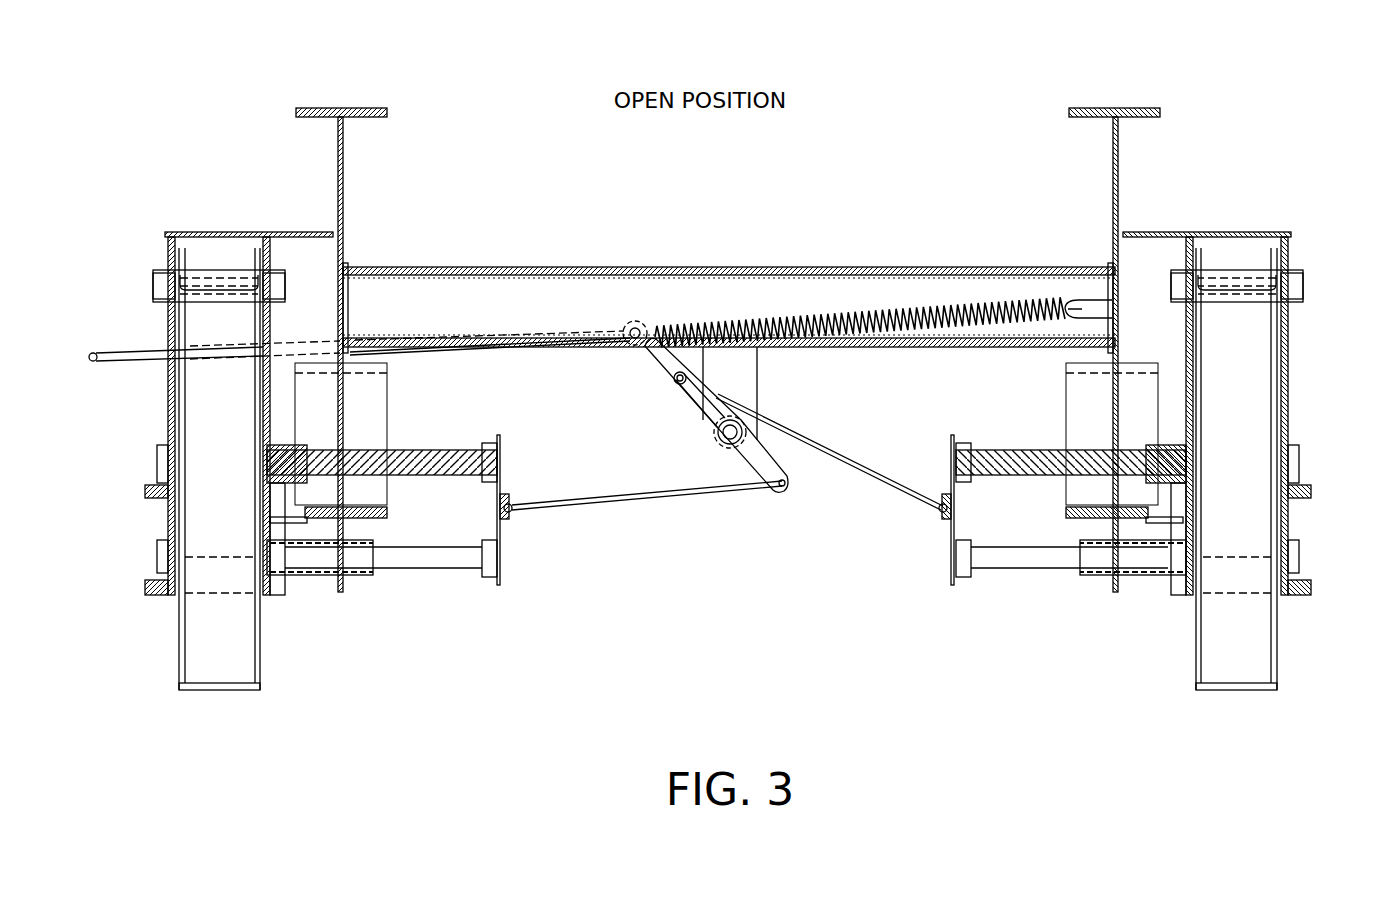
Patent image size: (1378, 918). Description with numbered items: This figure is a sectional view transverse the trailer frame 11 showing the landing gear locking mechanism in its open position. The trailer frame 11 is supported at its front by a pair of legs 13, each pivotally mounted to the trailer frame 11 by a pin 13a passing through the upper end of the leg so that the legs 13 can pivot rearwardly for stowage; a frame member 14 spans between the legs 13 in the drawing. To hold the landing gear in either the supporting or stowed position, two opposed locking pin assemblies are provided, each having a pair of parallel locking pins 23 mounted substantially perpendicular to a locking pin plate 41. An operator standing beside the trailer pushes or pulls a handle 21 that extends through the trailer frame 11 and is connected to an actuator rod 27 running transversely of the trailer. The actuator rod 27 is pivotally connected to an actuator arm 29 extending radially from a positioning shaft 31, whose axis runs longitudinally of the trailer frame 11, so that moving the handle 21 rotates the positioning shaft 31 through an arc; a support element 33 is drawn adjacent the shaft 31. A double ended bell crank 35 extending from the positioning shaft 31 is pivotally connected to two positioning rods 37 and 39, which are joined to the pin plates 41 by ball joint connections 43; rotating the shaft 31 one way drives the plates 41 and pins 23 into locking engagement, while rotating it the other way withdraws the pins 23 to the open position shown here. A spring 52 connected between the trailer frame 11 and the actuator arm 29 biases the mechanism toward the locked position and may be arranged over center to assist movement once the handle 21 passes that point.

The trailer frame 11 is at (343, 100).
The legs 13 is at (178, 662).
The pin 13a is at (152, 285).
The horizontal beam 14 is at (570, 266).
The handle 21 is at (90, 355).
The locking pins 23 is at (420, 476).
The actuator rod 27 is at (125, 362).
The actuator arm 29 is at (212, 232).
The positioning shaft 31 is at (721, 432).
The bracket plate 33 is at (758, 386).
The double ended bell crank 35 is at (760, 462).
The positioning rod 37 is at (627, 506).
The positioning rod 39 is at (848, 466).
The locking pin plate 41 is at (500, 534).
The ball joint connection 43 is at (510, 503).
The spring 52 is at (1010, 325).